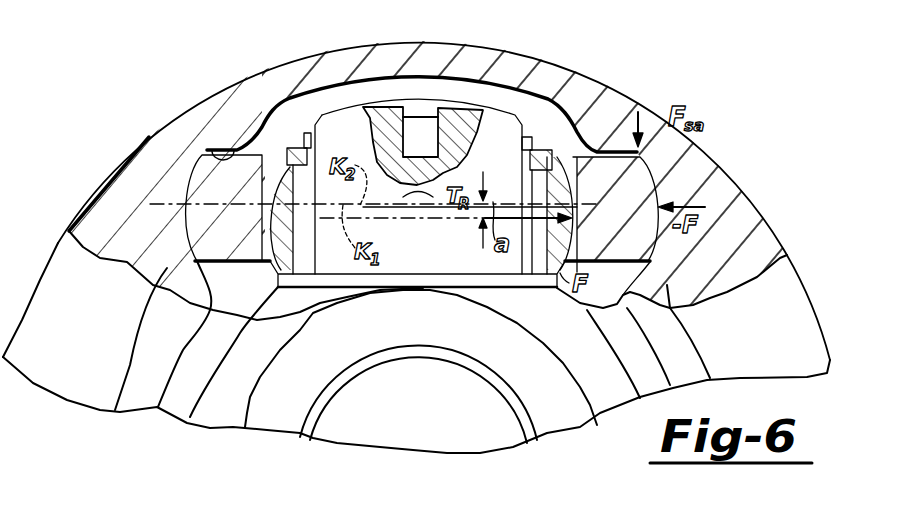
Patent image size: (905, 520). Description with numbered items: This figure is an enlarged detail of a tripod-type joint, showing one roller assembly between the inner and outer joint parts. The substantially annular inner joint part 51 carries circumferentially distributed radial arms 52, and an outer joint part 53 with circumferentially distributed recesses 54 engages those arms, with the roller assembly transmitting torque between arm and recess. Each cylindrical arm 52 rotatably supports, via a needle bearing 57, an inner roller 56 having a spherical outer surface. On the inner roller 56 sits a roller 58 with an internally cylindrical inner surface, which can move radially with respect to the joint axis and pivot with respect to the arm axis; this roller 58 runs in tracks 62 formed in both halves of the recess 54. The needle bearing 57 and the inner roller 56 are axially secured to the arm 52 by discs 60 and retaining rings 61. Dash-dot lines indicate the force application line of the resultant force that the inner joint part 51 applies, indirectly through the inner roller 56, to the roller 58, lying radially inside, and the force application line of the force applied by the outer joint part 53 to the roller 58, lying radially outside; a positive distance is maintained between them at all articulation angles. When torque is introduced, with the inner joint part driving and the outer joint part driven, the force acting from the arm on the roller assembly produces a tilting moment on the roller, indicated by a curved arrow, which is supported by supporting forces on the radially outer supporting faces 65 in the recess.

The inner joint part 51 is at (297, 372).
The radial arms 52 is at (333, 252).
The outer joint part 53 is at (87, 360).
The recesses 54 is at (520, 105).
The inner rollers 56 is at (598, 148).
The needle bearing 57 is at (583, 170).
The rollers 58 is at (596, 152).
The discs 60 is at (321, 140).
The retaining rings 61 is at (290, 147).
The tracks 62 is at (187, 193).
The supporting faces 65 is at (237, 148).